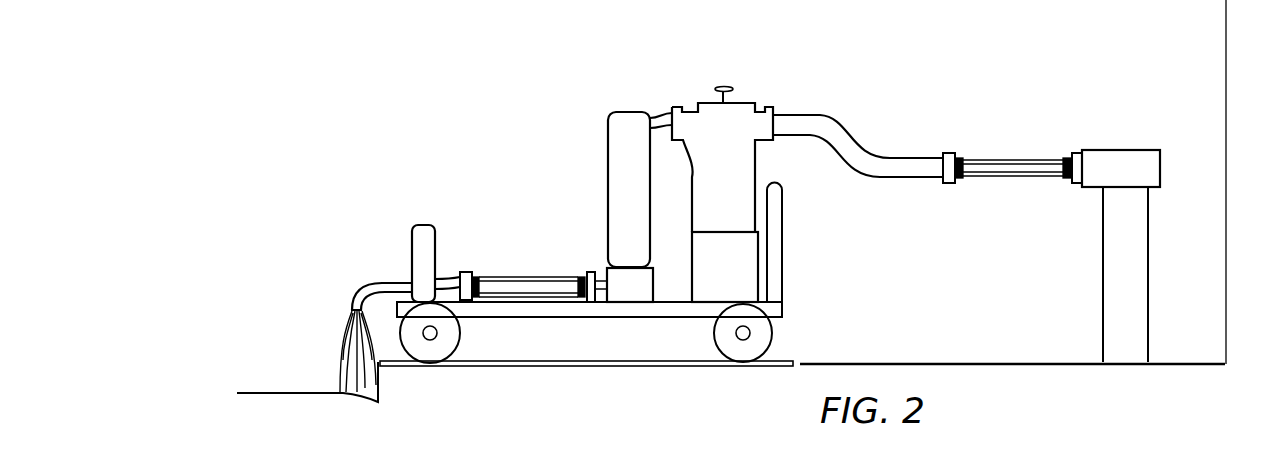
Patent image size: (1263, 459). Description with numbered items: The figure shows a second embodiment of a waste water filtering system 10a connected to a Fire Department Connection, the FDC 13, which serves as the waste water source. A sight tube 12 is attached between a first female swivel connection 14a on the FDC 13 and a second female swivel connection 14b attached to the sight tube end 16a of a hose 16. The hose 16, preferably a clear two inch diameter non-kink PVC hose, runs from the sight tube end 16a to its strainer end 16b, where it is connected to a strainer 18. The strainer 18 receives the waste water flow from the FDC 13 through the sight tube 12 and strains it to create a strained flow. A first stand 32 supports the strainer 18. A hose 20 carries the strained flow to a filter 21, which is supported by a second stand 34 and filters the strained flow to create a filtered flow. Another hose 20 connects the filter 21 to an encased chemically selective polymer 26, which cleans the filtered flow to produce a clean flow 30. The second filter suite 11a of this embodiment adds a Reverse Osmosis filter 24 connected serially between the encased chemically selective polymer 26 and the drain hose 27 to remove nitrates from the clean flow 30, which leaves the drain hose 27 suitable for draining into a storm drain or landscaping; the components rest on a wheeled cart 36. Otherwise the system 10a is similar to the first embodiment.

The waste water filtering system 10a is at (300, 157).
The second filter suite 11a is at (753, 82).
The sight tube 12 is at (960, 203).
The Fire Department Connection (FDC) 13 is at (1133, 165).
The first female swivel connection 14a is at (1072, 155).
The second female swivel connection 14b is at (950, 152).
The hose 16 is at (846, 135).
The sight tube end 16a is at (939, 153).
The strainer end 16b is at (786, 113).
The strainer 18 is at (732, 157).
The hose 20 is at (447, 280).
The filter 21 is at (641, 207).
The Reverse Osmosis (RO) filter 24 is at (422, 228).
The encased chemically selective polymer 26 is at (582, 260).
The drain hose 27 is at (378, 283).
The clean flow 30 is at (345, 345).
The first stand 32 is at (737, 274).
The second stand 34 is at (645, 297).
The cart 36 is at (645, 312).